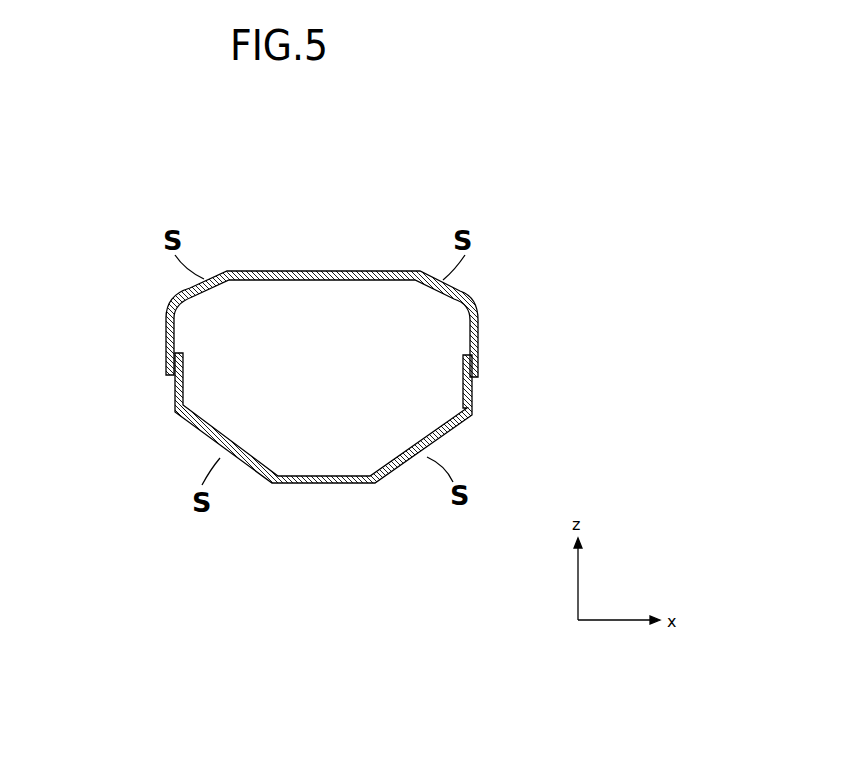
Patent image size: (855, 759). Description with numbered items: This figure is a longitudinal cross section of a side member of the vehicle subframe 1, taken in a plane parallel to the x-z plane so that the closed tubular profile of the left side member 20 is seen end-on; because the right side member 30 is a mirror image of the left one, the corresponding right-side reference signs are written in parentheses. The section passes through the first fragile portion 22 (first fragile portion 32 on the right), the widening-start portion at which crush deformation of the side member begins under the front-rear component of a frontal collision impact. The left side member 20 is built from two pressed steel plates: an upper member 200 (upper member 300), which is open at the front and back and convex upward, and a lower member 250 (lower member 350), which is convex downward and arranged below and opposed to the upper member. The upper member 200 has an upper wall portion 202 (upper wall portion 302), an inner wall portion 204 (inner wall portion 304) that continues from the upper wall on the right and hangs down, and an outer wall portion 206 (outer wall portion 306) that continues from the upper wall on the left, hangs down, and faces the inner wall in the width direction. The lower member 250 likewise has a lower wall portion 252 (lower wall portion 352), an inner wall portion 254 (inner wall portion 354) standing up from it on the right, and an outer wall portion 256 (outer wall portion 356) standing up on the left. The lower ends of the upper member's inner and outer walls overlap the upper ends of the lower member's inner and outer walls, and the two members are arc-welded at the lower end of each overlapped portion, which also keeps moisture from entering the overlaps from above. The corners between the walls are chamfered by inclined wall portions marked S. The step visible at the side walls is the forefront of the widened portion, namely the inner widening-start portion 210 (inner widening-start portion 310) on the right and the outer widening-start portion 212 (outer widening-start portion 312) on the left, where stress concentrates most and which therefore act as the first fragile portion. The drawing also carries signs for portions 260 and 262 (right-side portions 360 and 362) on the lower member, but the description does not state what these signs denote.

The subframe 1 is at (474, 167).
The left side member 20 is at (320, 346).
The right side member 30 is at (385, 197).
The first fragile portion 22 is at (320, 371).
The first fragile portion 32 is at (268, 247).
The upper member 200 is at (320, 282).
The upper member 300 is at (475, 277).
The upper wall portion 202 is at (323, 247).
The upper wall portion 302 is at (338, 247).
The inner wall portion 204 is at (520, 324).
The inner wall portion 304 is at (478, 352).
The outer wall portion 206 is at (122, 323).
The outer wall portion 306 is at (166, 350).
The inner widening-start portion 210 is at (544, 371).
The inner widening-start portion 310 is at (475, 362).
The outer widening-start portion 212 is at (99, 371).
The outer widening-start portion 312 is at (172, 363).
The lower member 250 is at (320, 464).
The lower member 350 is at (230, 505).
The lower wall portion 252 is at (323, 513).
The lower wall portion 352 is at (330, 483).
The inner wall portion 254 is at (540, 398).
The inner wall portion 354 is at (476, 410).
The outer wall portion 256 is at (106, 397).
The outer wall portion 356 is at (174, 410).
The right inclined portion 260 is at (490, 445).
The right inclined portion (alternative) 360 is at (473, 416).
The left inclined portion 262 is at (155, 444).
The left inclined portion (alternative) 362 is at (172, 417).